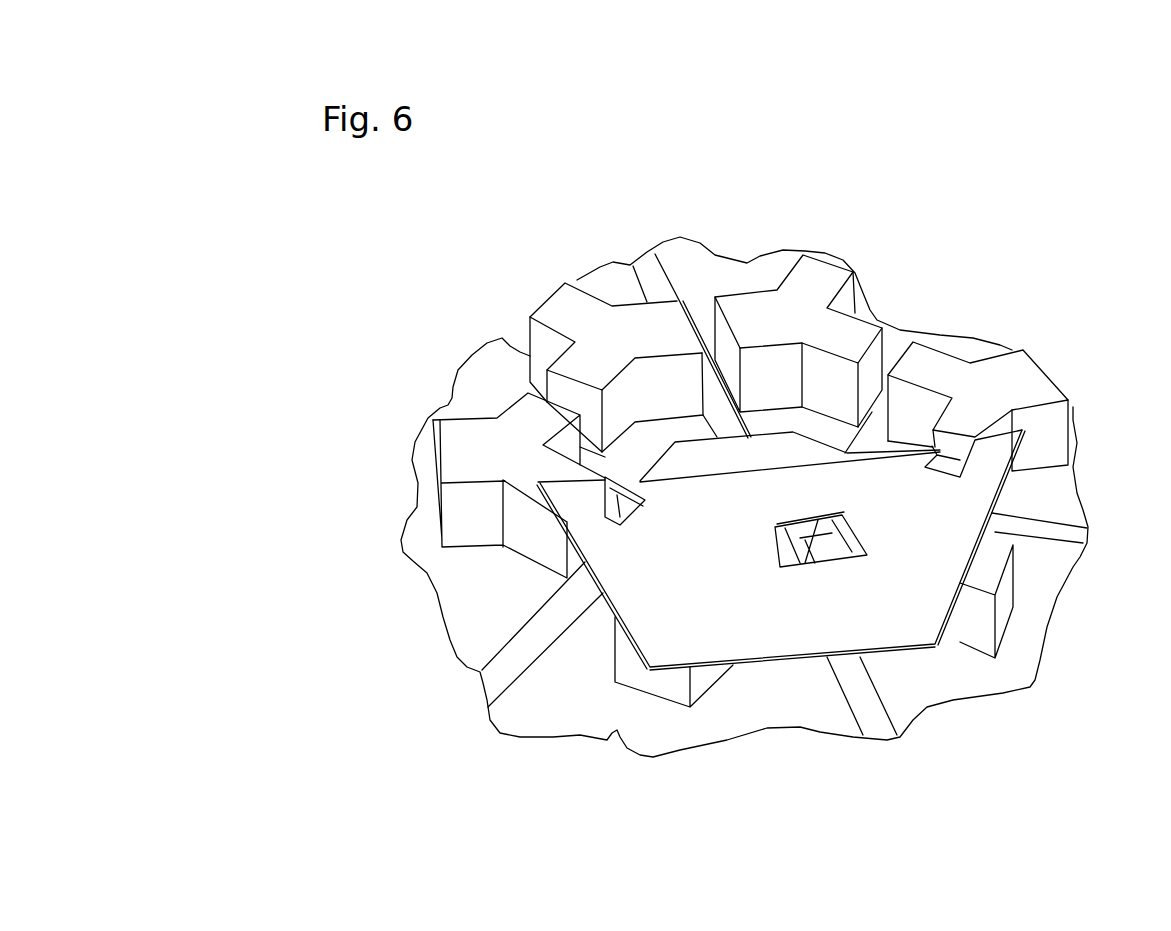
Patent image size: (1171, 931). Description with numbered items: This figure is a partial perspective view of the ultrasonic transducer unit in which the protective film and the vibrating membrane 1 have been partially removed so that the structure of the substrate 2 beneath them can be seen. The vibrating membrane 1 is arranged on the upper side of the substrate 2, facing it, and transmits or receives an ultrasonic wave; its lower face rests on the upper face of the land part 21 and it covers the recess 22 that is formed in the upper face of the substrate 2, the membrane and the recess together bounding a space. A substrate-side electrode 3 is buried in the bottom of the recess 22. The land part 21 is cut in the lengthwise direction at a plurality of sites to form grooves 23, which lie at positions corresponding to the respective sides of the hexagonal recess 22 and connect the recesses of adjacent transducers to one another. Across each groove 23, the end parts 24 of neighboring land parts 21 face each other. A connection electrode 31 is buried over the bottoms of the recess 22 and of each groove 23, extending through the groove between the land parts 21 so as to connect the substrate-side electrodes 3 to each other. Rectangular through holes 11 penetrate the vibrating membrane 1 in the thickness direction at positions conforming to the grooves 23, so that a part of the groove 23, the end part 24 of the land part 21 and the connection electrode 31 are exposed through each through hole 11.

The vibrating membrane 1 is at (670, 657).
The substrate 2 is at (490, 613).
The substrate-side electrode 3 is at (657, 475).
The through hole 11 is at (587, 483).
The land part 21 is at (565, 312).
The recess 22 is at (830, 368).
The groove 23 is at (558, 387).
The end part 24 is at (787, 553).
The connection electrode 31 is at (646, 268).